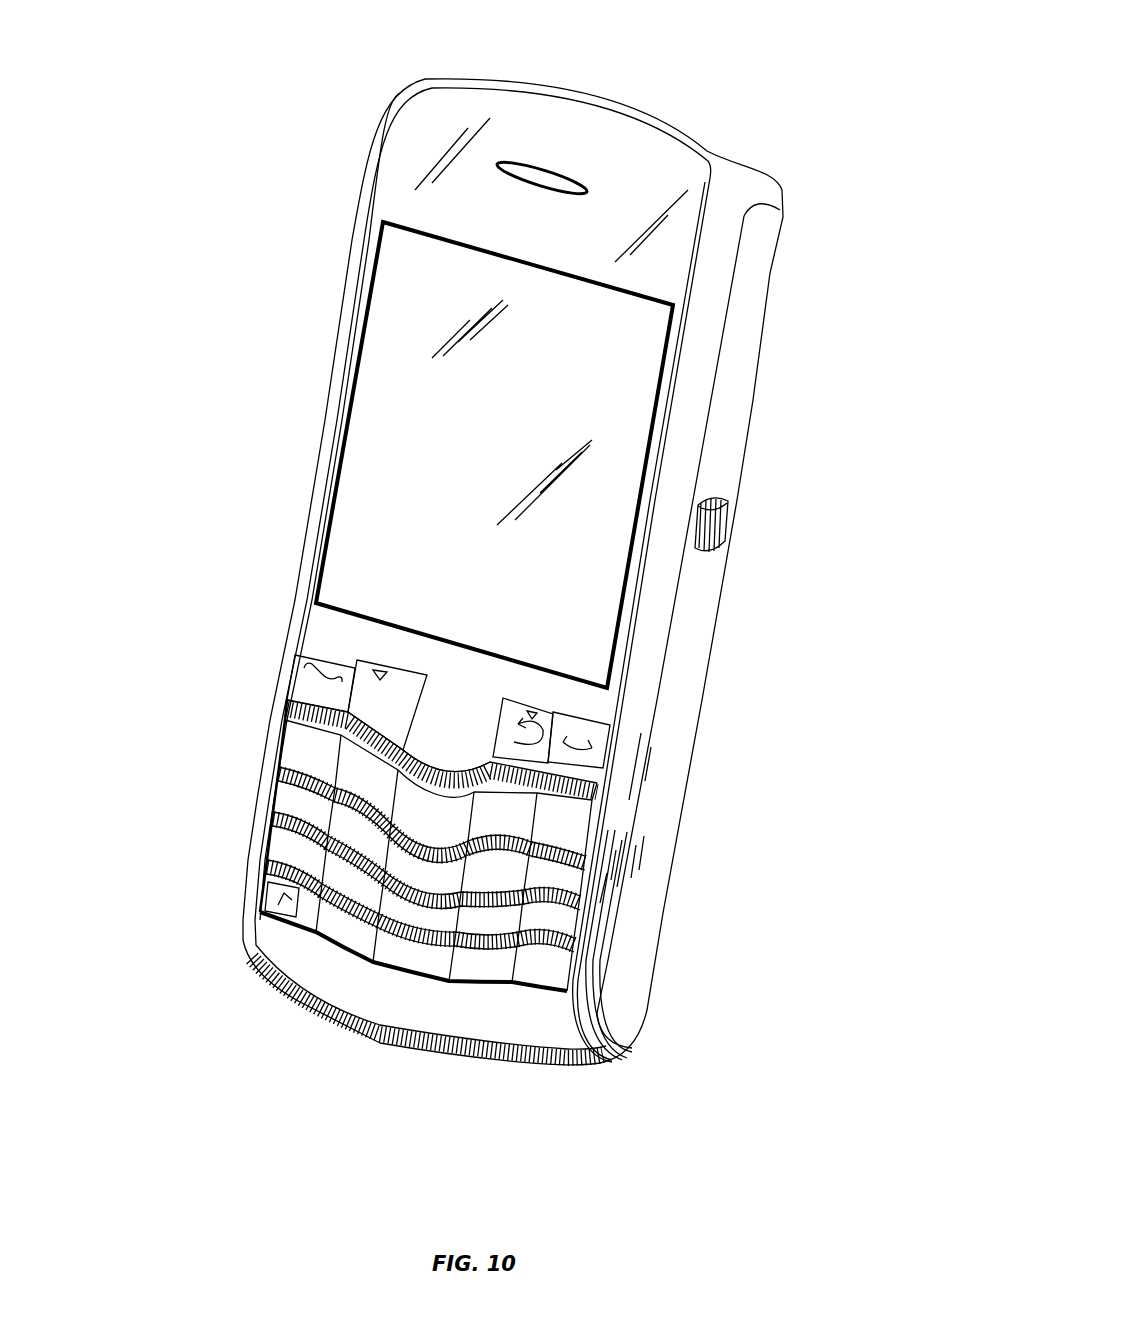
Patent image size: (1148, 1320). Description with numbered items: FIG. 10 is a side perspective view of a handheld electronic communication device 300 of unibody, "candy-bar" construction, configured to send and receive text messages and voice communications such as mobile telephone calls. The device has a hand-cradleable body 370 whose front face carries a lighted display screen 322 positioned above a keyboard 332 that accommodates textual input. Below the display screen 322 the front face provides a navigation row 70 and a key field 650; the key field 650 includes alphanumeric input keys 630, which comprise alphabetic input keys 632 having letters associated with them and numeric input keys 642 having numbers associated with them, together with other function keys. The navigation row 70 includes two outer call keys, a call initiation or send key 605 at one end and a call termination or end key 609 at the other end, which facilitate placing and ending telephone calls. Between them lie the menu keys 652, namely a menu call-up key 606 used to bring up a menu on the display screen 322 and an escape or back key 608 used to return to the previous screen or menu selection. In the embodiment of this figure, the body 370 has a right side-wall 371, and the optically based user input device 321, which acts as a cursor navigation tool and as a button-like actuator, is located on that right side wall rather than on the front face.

The handheld electronic communication device 300 is at (703, 43).
The display screen 322 is at (403, 277).
The body 370 is at (730, 200).
The right side-wall 371 is at (740, 373).
The optically based user input device 321 is at (733, 527).
The menu call-up key 606 is at (347, 652).
The menu keys 652 is at (530, 708).
The navigation row 70 is at (295, 657).
The call initiation key 605 is at (293, 703).
The escape key 608 is at (575, 718).
The call termination key 609 is at (577, 762).
The alphabetic input keys 632 is at (283, 785).
The key field 650 is at (278, 917).
The keyboard 332 is at (398, 993).
The numeric input keys 642 is at (436, 948).
The alphanumeric input keys 630 is at (527, 958).